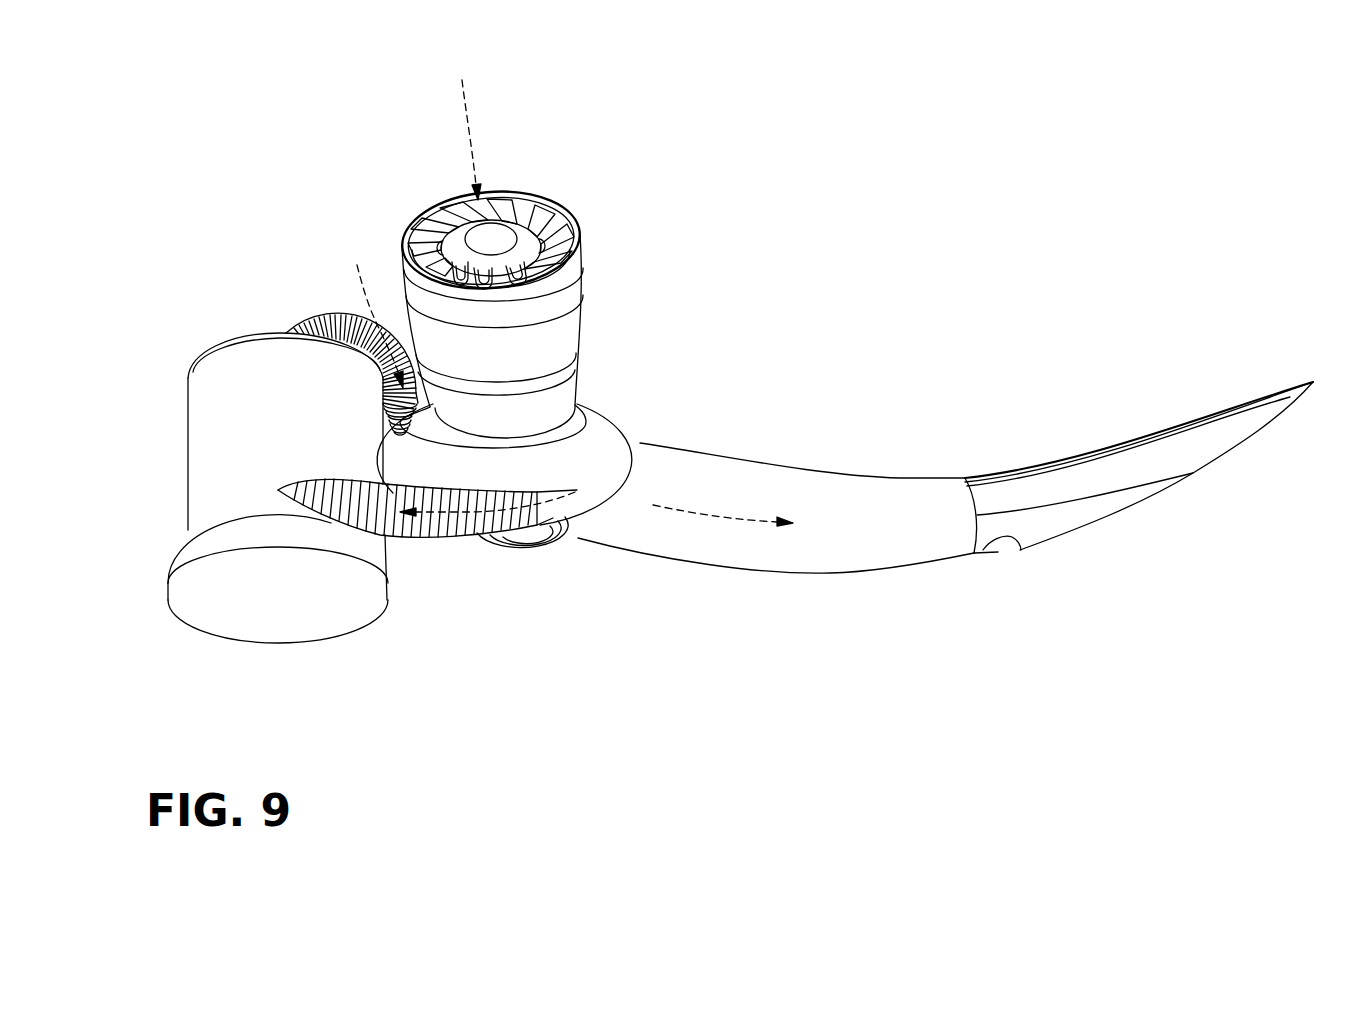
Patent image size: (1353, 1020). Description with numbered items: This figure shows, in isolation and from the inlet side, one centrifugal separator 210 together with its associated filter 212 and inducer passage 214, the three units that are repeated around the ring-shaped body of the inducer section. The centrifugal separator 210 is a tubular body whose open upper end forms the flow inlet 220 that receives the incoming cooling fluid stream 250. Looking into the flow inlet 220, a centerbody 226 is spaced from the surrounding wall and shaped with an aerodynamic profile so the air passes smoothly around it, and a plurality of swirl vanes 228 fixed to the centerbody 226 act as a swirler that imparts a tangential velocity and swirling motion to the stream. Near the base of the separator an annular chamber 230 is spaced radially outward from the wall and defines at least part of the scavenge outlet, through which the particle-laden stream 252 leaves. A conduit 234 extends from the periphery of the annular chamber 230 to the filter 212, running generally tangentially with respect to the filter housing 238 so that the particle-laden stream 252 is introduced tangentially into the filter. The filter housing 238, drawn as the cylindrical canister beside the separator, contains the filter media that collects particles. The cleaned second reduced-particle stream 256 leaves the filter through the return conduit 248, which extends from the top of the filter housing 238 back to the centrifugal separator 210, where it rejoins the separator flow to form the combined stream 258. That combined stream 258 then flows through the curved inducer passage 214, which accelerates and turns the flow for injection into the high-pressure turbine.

The centrifugal separator 210 is at (605, 269).
The filter 212 is at (165, 395).
The inducer passage 214 is at (765, 455).
The flow inlet 220 is at (530, 195).
The centerbody 226 is at (487, 235).
The swirl vanes 228 is at (438, 237).
The annular chamber 230 is at (617, 462).
The conduit 234 is at (417, 530).
The filter housing 238 is at (223, 468).
The return conduit 248 is at (338, 318).
The cooling fluid stream 250 is at (473, 110).
The particle-laden stream 252 is at (505, 510).
The second reduced-particle stream 256 is at (368, 309).
The combined stream 258 is at (717, 517).